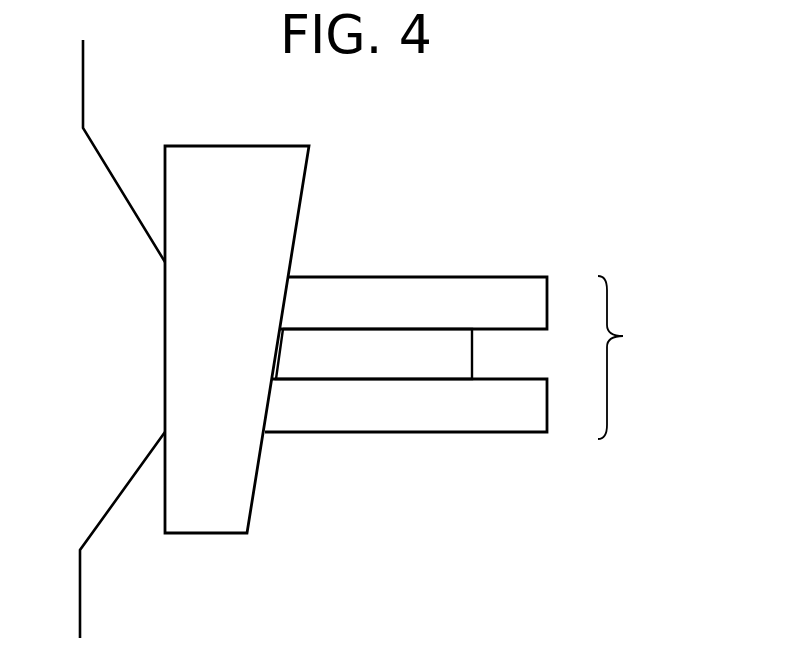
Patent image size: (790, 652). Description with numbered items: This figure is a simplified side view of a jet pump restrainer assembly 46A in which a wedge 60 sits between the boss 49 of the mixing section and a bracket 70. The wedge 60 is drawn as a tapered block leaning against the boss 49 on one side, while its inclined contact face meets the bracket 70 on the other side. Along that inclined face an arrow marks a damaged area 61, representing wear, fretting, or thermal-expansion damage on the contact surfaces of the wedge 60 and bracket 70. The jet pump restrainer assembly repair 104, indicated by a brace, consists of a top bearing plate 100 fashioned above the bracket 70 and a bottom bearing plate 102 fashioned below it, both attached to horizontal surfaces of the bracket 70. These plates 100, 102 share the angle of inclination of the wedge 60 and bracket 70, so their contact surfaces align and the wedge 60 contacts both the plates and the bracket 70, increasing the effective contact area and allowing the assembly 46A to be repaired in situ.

The boss 49 is at (93, 143).
The wedge 60 is at (277, 145).
The damaged area 61 is at (268, 348).
The top bearing plate 100 is at (395, 277).
The bottom bearing plate 102 is at (396, 433).
The bracket 70 is at (507, 353).
The jet pump restrainer assembly repair 104 is at (640, 357).
The jet pump restrainer assembly 46A is at (470, 163).